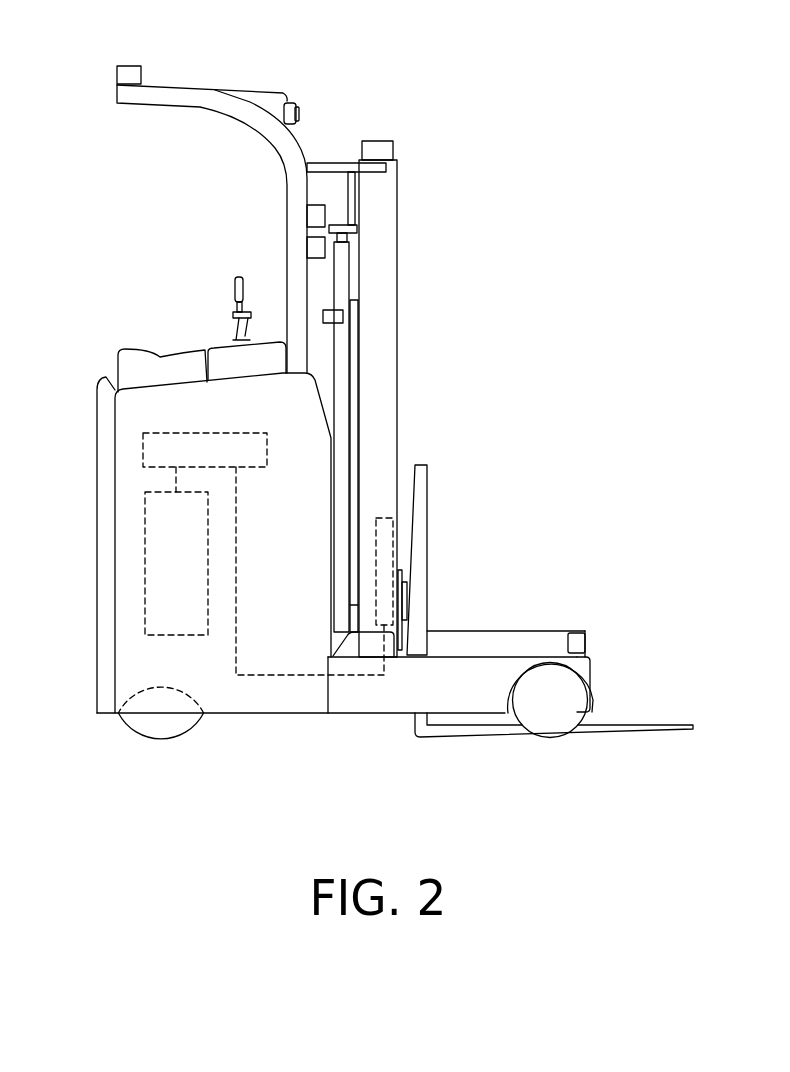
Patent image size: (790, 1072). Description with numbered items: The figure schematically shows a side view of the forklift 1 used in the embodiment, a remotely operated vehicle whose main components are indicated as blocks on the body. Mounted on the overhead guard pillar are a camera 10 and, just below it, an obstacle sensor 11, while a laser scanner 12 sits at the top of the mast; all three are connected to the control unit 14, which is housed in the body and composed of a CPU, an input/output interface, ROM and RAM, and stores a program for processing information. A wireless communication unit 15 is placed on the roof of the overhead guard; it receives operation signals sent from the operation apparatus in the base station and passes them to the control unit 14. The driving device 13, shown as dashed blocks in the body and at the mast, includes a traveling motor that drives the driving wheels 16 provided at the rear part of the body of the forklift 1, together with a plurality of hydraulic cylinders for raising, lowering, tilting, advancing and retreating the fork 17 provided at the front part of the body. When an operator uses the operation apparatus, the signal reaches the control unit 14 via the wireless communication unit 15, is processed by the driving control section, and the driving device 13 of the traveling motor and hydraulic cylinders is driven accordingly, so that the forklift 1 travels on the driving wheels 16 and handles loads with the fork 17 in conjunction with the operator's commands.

The forklift 1 is at (485, 76).
The camera 10 is at (312, 213).
The obstacle sensor 11 is at (310, 250).
The laser scanner 12 is at (393, 150).
The driving device 13 is at (148, 563).
The control unit 14 is at (145, 453).
The wireless communication unit 15 is at (121, 73).
The driving wheels 16 is at (135, 723).
The fork 17 is at (625, 725).